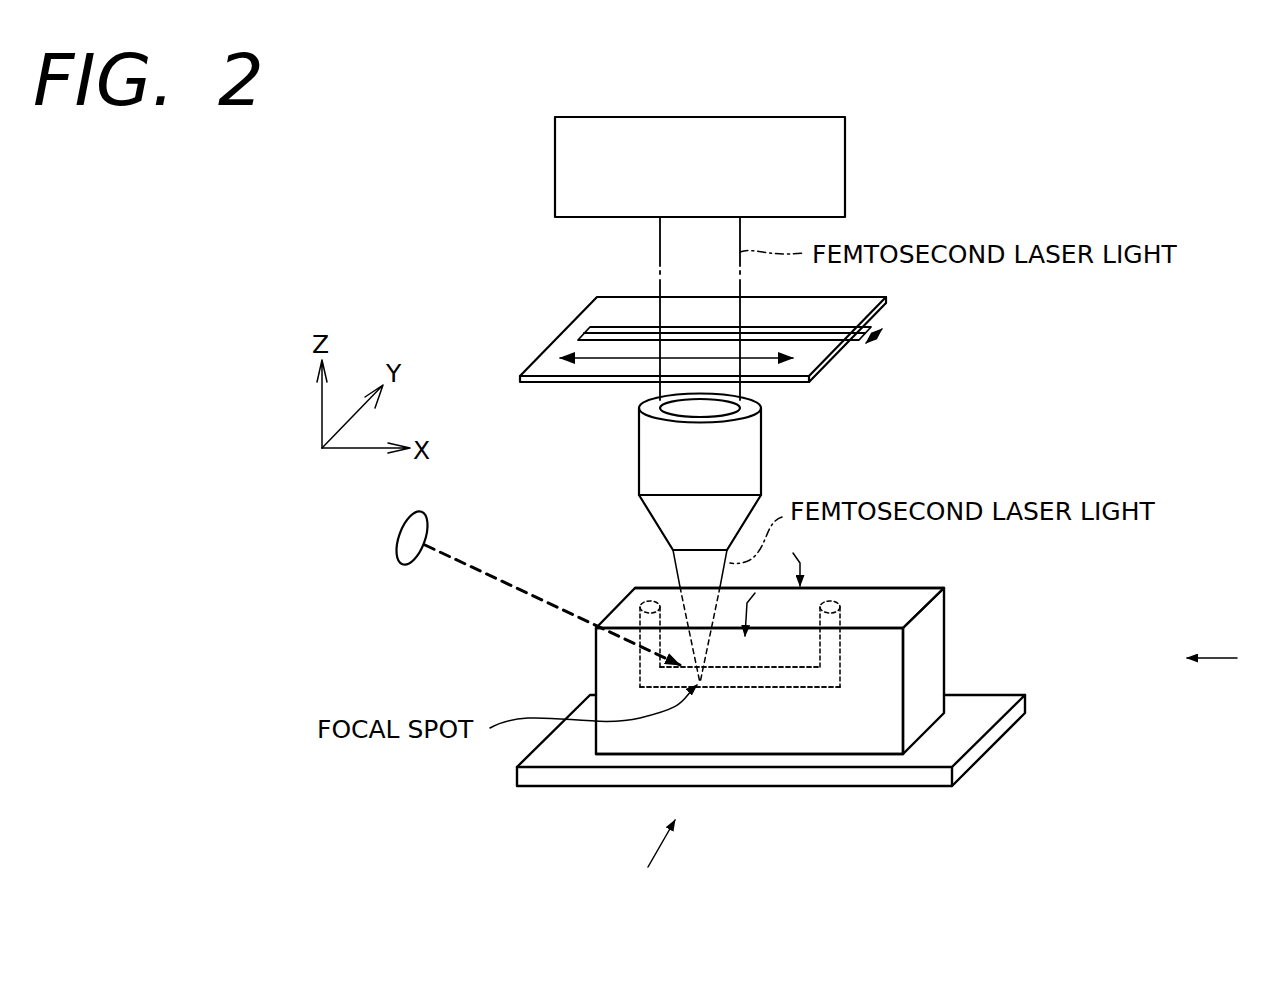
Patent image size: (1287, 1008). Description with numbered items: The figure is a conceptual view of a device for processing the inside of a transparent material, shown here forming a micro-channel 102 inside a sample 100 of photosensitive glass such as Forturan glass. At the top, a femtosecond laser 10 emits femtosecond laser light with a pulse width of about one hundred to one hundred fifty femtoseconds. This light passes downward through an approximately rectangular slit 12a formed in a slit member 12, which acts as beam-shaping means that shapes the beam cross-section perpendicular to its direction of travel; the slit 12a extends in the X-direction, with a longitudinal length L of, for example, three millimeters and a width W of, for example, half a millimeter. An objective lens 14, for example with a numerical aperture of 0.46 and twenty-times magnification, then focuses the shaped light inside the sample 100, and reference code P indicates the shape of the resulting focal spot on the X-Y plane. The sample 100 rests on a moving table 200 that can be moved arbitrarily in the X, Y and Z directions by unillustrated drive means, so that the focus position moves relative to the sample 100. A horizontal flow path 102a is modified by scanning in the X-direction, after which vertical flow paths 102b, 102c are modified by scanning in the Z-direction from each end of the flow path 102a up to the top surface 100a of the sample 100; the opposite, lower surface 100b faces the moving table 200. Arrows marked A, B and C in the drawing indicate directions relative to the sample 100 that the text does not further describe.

The femtosecond laser 10 is at (842, 152).
The slit member 12 is at (815, 353).
The slit 12a is at (805, 332).
The objective lens 14 is at (753, 460).
The sample 100 is at (952, 614).
The top surface 100a is at (912, 592).
The bottom surface of substrate 100b is at (620, 758).
The micro-channel 102 is at (843, 667).
The flow path 102a is at (785, 677).
The flow path 102b is at (633, 658).
The flow path 102c is at (833, 646).
The moving table 200 is at (985, 712).
The length in longitudinal direction L is at (615, 358).
The length in width direction W is at (889, 341).
The focal spot shape P is at (397, 542).
The view direction A is at (653, 859).
The section B is at (774, 610).
The view direction C is at (1224, 659).